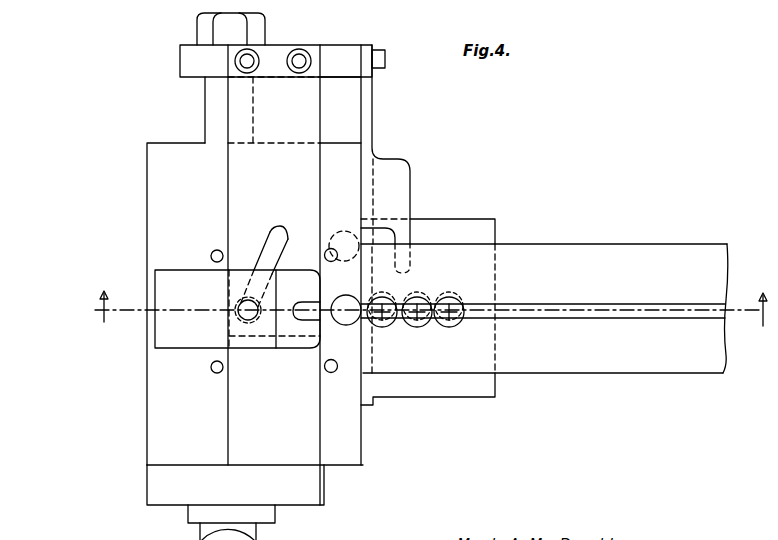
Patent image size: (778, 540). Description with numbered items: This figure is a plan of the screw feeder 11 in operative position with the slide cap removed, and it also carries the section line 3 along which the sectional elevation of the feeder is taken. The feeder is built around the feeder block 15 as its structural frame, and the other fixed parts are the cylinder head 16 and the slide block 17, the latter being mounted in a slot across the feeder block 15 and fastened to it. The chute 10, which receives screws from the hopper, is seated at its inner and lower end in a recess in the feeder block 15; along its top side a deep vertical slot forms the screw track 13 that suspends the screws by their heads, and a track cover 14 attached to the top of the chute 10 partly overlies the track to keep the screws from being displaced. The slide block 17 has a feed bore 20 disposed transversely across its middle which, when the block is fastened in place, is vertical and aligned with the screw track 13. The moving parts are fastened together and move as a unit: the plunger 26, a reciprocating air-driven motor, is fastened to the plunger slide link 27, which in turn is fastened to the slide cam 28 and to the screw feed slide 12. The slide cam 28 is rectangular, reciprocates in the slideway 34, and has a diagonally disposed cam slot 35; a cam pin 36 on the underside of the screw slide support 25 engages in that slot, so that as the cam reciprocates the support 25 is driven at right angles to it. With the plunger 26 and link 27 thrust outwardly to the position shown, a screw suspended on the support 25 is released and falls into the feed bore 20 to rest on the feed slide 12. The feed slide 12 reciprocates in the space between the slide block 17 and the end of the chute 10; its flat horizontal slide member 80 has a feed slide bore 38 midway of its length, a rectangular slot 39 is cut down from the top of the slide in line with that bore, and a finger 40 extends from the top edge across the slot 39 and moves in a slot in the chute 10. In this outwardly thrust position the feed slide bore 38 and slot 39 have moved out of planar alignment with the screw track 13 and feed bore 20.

The section line 3— 3 is at (418, 308).
The chute 10 is at (713, 366).
The screw feeder 11 is at (429, 175).
The screw feed slide 12 is at (362, 110).
The screw track 13 is at (682, 319).
The track cover 14 is at (713, 252).
The feeder block 15 is at (478, 388).
The cylinder head 16 is at (156, 493).
The slide block 17 is at (350, 455).
The feed bore 20 is at (344, 320).
The screw slide support 25 is at (162, 330).
The plunger 26 is at (205, 108).
The plunger slide link 27 is at (180, 61).
The slide cam 28 is at (245, 184).
The slideway 34 is at (300, 457).
The cam slot 35 is at (273, 232).
The cam pin 36 is at (246, 314).
The feed slide bore 38 is at (336, 233).
The slot 39 is at (370, 240).
The finger 40 is at (410, 258).
The horizontal slide member 80 is at (348, 127).